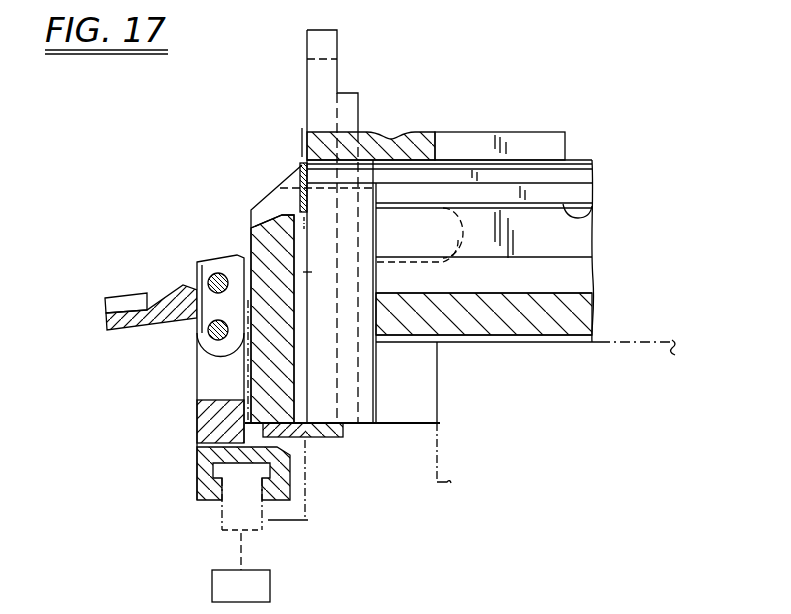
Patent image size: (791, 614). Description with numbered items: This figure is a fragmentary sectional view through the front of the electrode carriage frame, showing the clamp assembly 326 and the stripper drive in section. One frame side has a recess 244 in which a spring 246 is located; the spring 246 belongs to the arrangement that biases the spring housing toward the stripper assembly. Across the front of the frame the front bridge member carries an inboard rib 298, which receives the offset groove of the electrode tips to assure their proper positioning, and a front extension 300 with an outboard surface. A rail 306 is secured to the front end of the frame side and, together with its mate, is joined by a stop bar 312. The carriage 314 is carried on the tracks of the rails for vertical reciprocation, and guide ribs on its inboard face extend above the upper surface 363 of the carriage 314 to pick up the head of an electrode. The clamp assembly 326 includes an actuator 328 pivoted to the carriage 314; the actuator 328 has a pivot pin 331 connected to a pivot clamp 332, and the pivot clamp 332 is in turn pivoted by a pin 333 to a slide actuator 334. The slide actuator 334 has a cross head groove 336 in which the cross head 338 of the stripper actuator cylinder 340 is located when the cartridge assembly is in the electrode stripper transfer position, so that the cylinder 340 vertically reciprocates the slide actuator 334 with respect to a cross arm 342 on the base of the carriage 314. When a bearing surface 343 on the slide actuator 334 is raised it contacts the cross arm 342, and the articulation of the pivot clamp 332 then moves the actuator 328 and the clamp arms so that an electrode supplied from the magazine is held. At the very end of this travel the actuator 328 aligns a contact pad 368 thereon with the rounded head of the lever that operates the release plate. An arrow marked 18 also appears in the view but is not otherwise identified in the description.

The rail 306 is at (322, 97).
The front extension 300 is at (338, 132).
The inboard rib 298 is at (487, 126).
The direction arrow 18 is at (300, 133).
The upper surface 363 is at (301, 181).
The clamp assembly 326 is at (218, 248).
The carriage 314 is at (261, 362).
The stop bar 312 is at (343, 432).
The contact pad 368 is at (137, 250).
The actuator 328 is at (110, 320).
The pin 333 is at (248, 358).
The pivot pin 331 is at (210, 276).
The pivot clamp 332 is at (208, 317).
The slide actuator 334 is at (198, 413).
The cross head groove 336 is at (212, 477).
The cross head 338 is at (214, 513).
The stripper actuator cylinder 340 is at (212, 575).
The cross arm 342 is at (292, 443).
The bearing surface 343 is at (290, 470).
The recess 244 is at (586, 210).
The spring 246 is at (582, 242).